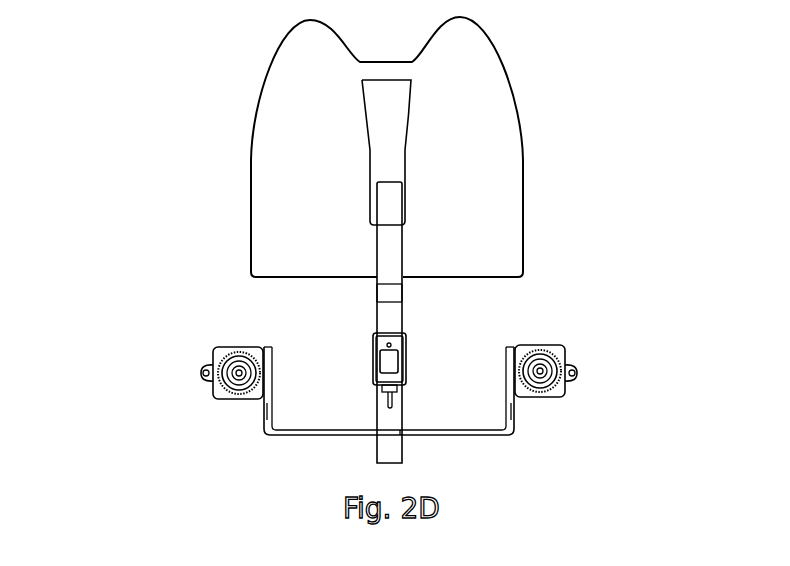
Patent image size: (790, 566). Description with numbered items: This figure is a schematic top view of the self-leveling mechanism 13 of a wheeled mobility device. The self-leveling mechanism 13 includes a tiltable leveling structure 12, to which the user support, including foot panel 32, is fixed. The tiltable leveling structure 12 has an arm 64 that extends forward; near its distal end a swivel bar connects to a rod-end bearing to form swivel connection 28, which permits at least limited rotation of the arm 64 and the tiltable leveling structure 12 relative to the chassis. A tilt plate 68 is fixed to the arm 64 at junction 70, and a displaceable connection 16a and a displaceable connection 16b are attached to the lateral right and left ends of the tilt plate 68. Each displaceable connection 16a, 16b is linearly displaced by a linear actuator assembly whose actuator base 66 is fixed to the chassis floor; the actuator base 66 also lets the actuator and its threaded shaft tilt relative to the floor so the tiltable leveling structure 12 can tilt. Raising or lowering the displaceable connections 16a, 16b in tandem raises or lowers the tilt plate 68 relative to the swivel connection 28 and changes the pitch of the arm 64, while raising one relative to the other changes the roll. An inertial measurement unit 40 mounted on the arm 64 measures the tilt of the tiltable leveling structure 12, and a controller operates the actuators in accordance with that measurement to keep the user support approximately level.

The self-leveling mechanism 13 is at (128, 108).
The foot panel 32 is at (515, 117).
The swivel connection 28 is at (350, 188).
The tiltable leveling structure 12 is at (527, 307).
The arm 64 is at (402, 309).
The inertial measurement unit 40 is at (382, 360).
The tilt plate 68 is at (339, 428).
The junction 70 is at (400, 428).
The displaceable connection 16a is at (232, 355).
The displaceable connection 16b is at (557, 358).
The actuator base 66 is at (202, 370).